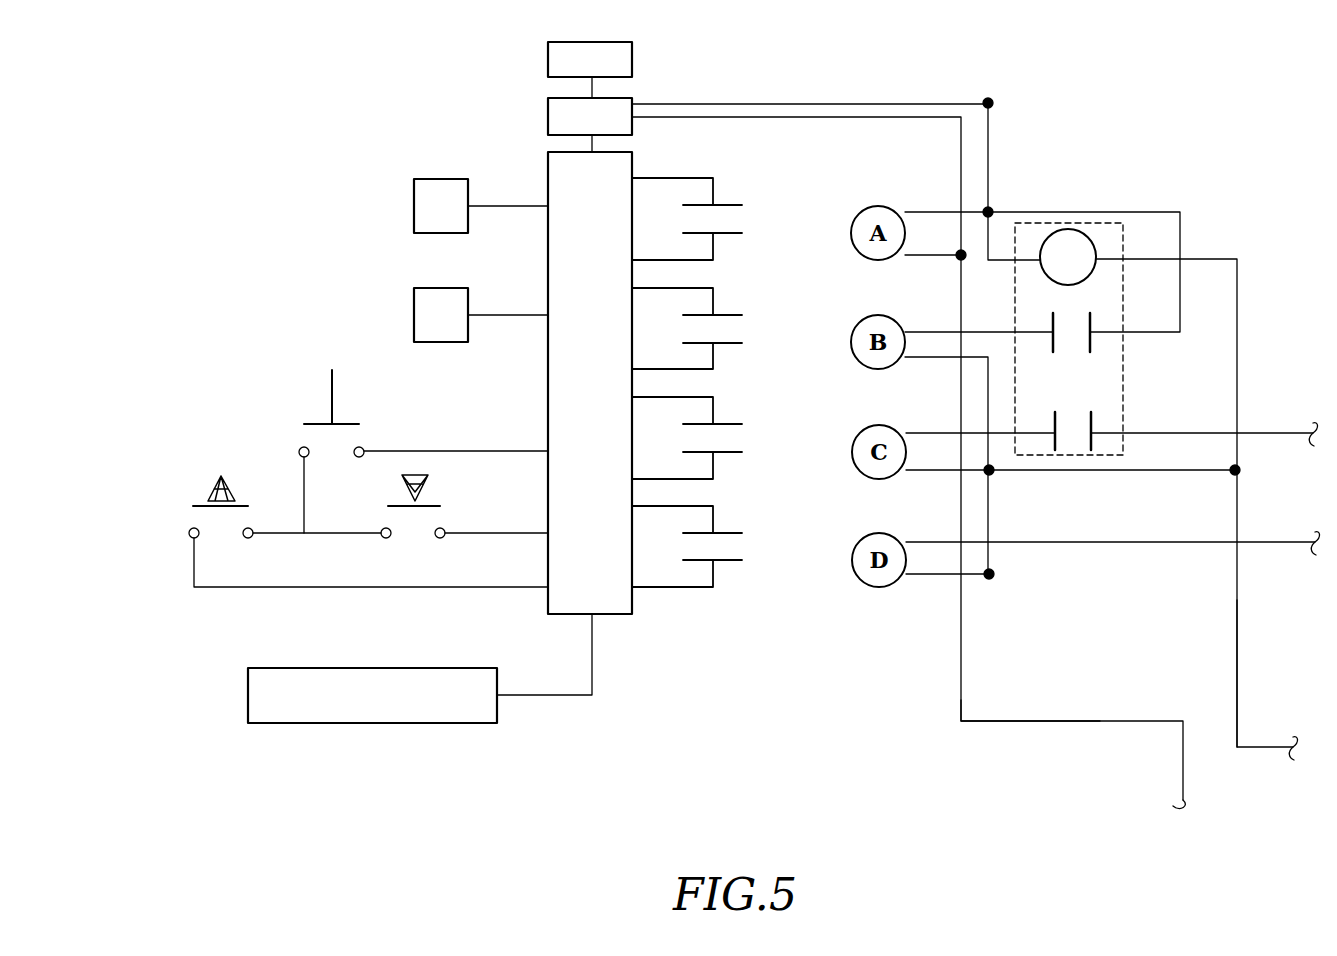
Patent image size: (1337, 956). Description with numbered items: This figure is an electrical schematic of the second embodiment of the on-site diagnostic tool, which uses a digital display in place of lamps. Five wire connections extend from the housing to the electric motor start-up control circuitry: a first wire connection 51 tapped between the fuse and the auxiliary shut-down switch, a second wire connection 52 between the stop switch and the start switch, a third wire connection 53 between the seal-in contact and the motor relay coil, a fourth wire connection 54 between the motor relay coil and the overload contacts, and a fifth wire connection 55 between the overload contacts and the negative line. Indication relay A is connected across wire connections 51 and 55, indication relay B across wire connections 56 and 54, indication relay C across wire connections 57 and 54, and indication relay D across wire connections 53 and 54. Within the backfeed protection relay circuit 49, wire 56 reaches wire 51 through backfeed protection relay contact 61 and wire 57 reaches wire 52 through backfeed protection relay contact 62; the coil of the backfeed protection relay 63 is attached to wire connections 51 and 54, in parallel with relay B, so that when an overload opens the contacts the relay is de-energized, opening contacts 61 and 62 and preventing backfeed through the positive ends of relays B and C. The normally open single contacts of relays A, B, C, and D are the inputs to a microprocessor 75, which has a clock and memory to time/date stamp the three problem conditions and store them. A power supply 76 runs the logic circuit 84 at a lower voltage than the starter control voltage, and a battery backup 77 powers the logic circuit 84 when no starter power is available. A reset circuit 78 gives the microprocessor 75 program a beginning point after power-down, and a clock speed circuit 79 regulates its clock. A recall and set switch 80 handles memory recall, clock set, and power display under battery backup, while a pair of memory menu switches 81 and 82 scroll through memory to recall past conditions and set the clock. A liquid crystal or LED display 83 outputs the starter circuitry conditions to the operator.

The backfeed protection relay circuit 49 is at (1125, 385).
The first wire connection 51 is at (988, 160).
The second wire connection 52 is at (1253, 431).
The third wire connection 53 is at (1253, 540).
The fourth wire connection 54 is at (1238, 677).
The fifth wire connection 55 is at (1068, 721).
The wire connection 56 is at (920, 332).
The wire connection 57 is at (925, 433).
The backfeed protection relay contact 61 is at (1072, 330).
The backfeed protection relay contact 62 is at (1073, 430).
The backfeed protection relay 63 is at (1085, 270).
The microprocessor 75 is at (610, 380).
The power supply 76 is at (610, 130).
The battery backup 77 is at (610, 73).
The reset circuit 78 is at (458, 217).
The clock speed circuit 79 is at (458, 326).
The recall and set switch 80 is at (332, 400).
The memory menu switch 81 is at (213, 478).
The memory menu switch 82 is at (423, 488).
The liquid crystal or LED display 83 is at (392, 703).
The logic circuit 84 is at (743, 643).